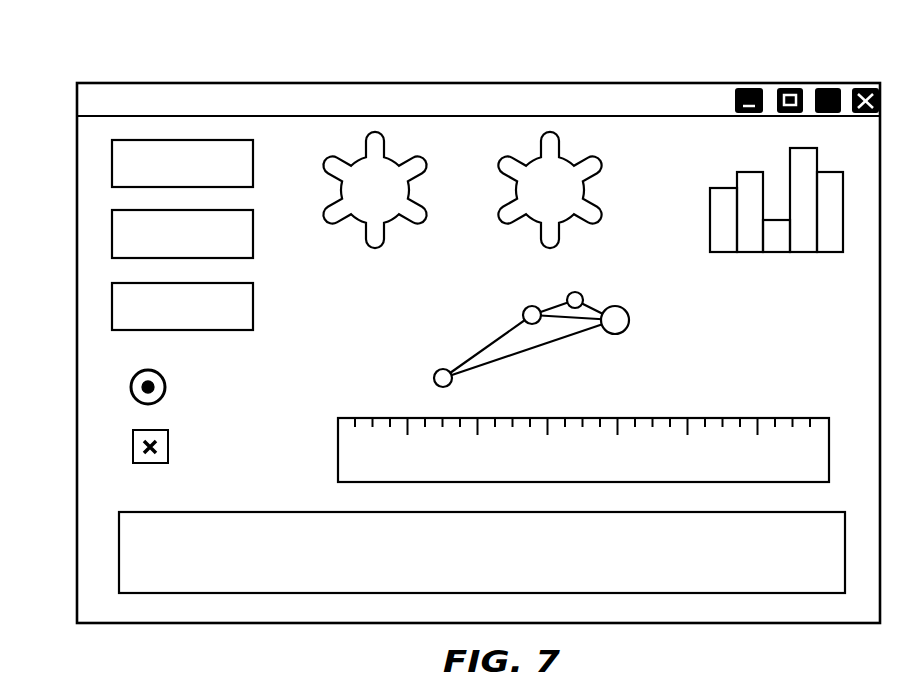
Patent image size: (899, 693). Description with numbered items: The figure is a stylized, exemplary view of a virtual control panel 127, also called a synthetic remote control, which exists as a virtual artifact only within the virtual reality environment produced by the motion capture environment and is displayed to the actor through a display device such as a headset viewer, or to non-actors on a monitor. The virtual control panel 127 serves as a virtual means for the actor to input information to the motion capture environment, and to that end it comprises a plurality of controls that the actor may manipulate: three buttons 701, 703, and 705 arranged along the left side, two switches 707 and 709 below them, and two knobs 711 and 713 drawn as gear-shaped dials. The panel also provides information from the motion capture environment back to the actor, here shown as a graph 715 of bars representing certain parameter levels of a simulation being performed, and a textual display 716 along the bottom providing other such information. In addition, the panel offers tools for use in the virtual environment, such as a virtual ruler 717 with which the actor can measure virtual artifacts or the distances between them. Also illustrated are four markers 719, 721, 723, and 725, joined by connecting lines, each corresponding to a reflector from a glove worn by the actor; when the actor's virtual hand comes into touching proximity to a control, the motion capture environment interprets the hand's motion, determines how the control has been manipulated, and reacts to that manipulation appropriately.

The virtual control panel 127 is at (305, 84).
The button 701 is at (121, 154).
The button 703 is at (121, 226).
The button 705 is at (121, 296).
The switch 707 is at (164, 380).
The switch 709 is at (163, 455).
The knob 711 is at (393, 200).
The knob 713 is at (570, 200).
The graph 715 is at (710, 217).
The textual display 716 is at (367, 570).
The virtual ruler 717 is at (762, 436).
The marker 719 is at (434, 381).
The marker 721 is at (524, 311).
The marker 723 is at (583, 298).
The marker 725 is at (625, 320).